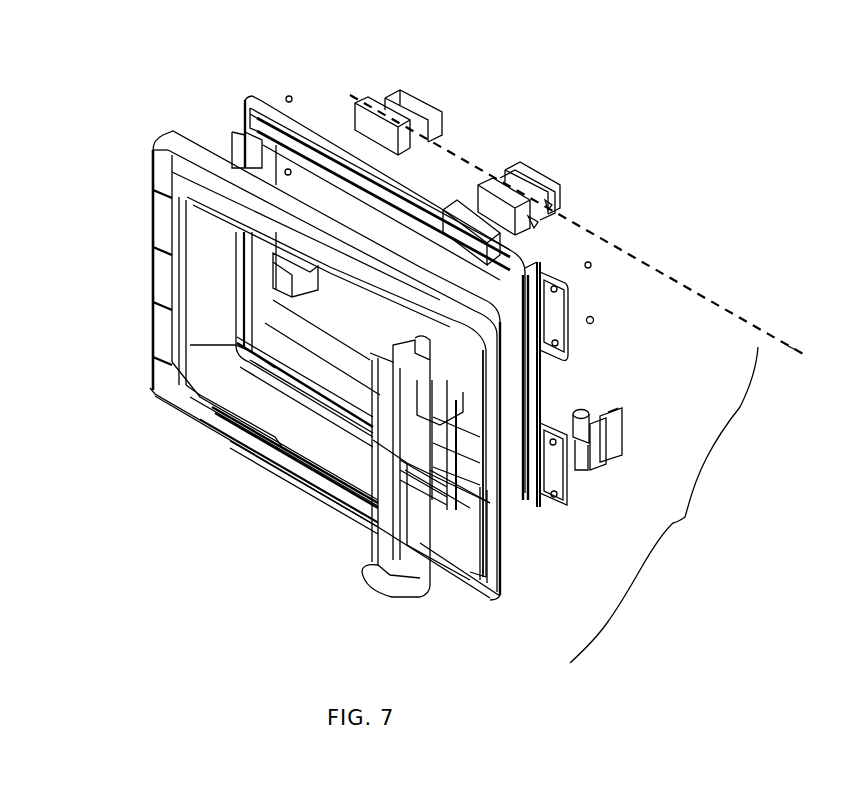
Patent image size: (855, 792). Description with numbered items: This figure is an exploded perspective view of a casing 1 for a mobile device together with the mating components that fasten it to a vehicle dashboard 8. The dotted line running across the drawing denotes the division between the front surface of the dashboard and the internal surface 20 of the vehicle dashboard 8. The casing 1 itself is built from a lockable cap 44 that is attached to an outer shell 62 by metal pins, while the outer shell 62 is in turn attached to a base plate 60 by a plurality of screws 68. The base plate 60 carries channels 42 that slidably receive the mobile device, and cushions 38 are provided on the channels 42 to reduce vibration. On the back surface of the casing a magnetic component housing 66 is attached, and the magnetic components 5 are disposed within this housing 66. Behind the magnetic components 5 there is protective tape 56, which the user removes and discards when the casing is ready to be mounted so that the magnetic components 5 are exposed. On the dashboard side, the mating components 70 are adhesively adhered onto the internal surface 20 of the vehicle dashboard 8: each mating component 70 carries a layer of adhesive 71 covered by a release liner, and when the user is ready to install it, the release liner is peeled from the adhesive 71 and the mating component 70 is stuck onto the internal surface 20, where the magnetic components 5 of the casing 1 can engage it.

The casing 1 is at (664, 505).
The magnetic components 5 is at (364, 138).
The vehicle dashboard 8 is at (790, 347).
The internal surface 20 is at (583, 225).
The cushions 38 is at (235, 360).
The channels 42 is at (293, 137).
The lockable cap 44 is at (415, 562).
The protective tape 56 is at (532, 221).
The base plate 60 is at (242, 92).
The outer shell 62 is at (157, 126).
The magnetic component housing 66 is at (458, 210).
The screws 68 is at (594, 322).
The mating components 70 is at (537, 187).
The adhesive 71 is at (548, 204).